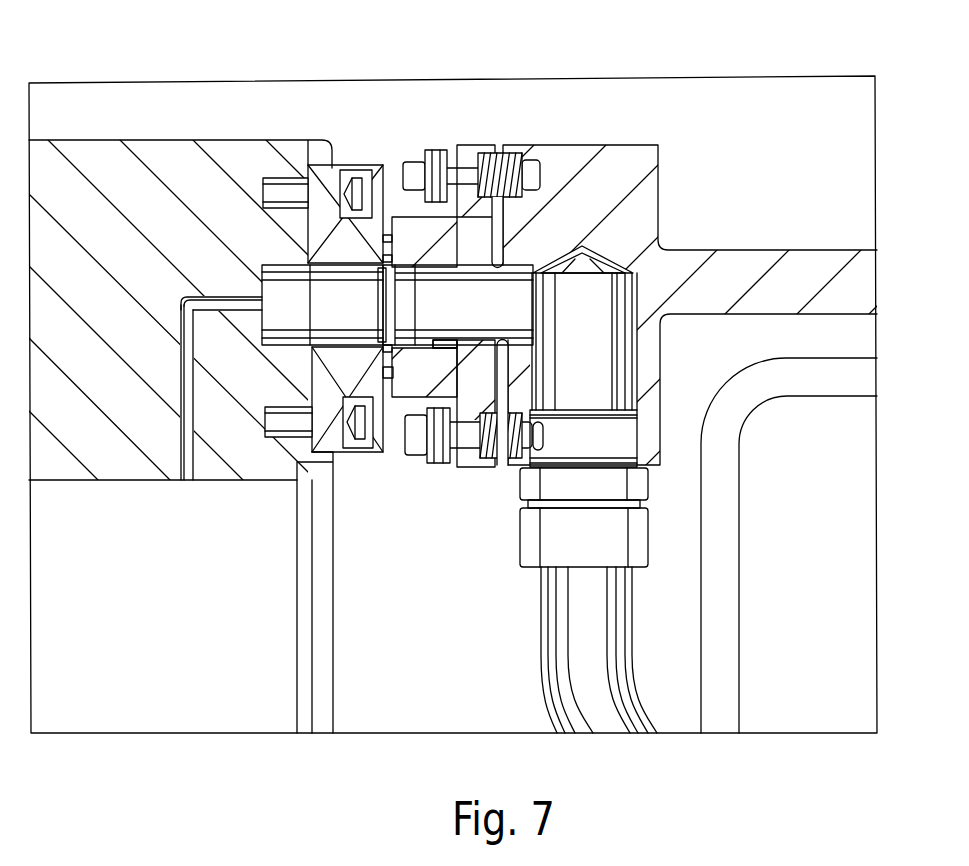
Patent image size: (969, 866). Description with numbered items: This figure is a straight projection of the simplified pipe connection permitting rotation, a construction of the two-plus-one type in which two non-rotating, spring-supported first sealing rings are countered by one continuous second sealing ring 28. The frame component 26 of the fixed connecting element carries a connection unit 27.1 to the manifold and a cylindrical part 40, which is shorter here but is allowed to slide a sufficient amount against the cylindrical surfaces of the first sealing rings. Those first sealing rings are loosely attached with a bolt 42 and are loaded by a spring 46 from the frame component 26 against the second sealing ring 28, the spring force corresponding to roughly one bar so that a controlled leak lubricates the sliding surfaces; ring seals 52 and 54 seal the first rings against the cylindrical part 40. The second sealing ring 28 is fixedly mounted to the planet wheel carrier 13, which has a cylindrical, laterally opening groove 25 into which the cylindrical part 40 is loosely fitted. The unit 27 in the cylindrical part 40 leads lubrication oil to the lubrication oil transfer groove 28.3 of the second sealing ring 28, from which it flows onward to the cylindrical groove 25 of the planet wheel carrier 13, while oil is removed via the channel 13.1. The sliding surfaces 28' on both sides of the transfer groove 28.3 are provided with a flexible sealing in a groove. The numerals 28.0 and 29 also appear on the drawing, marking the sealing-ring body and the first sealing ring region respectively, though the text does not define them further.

The planet wheel carrier 13 is at (94, 288).
The channel 13.1 is at (180, 443).
The cylindrical groove 25 is at (262, 275).
The frame component 26 is at (790, 280).
The unit 27 is at (467, 316).
The connection unit 27.1 is at (610, 347).
The second sealing ring 28 is at (321, 376).
The sliding surface 28' is at (436, 241).
The cylinder housing 28.0 is at (315, 320).
The lubrication oil transfer groove 28.3 is at (383, 330).
The gap 29 is at (397, 408).
The cylindrical part 40 is at (442, 263).
The bolt 42 is at (467, 172).
The spring 46 is at (505, 155).
The ring seal 52 is at (513, 272).
The ring seal 54 is at (447, 352).